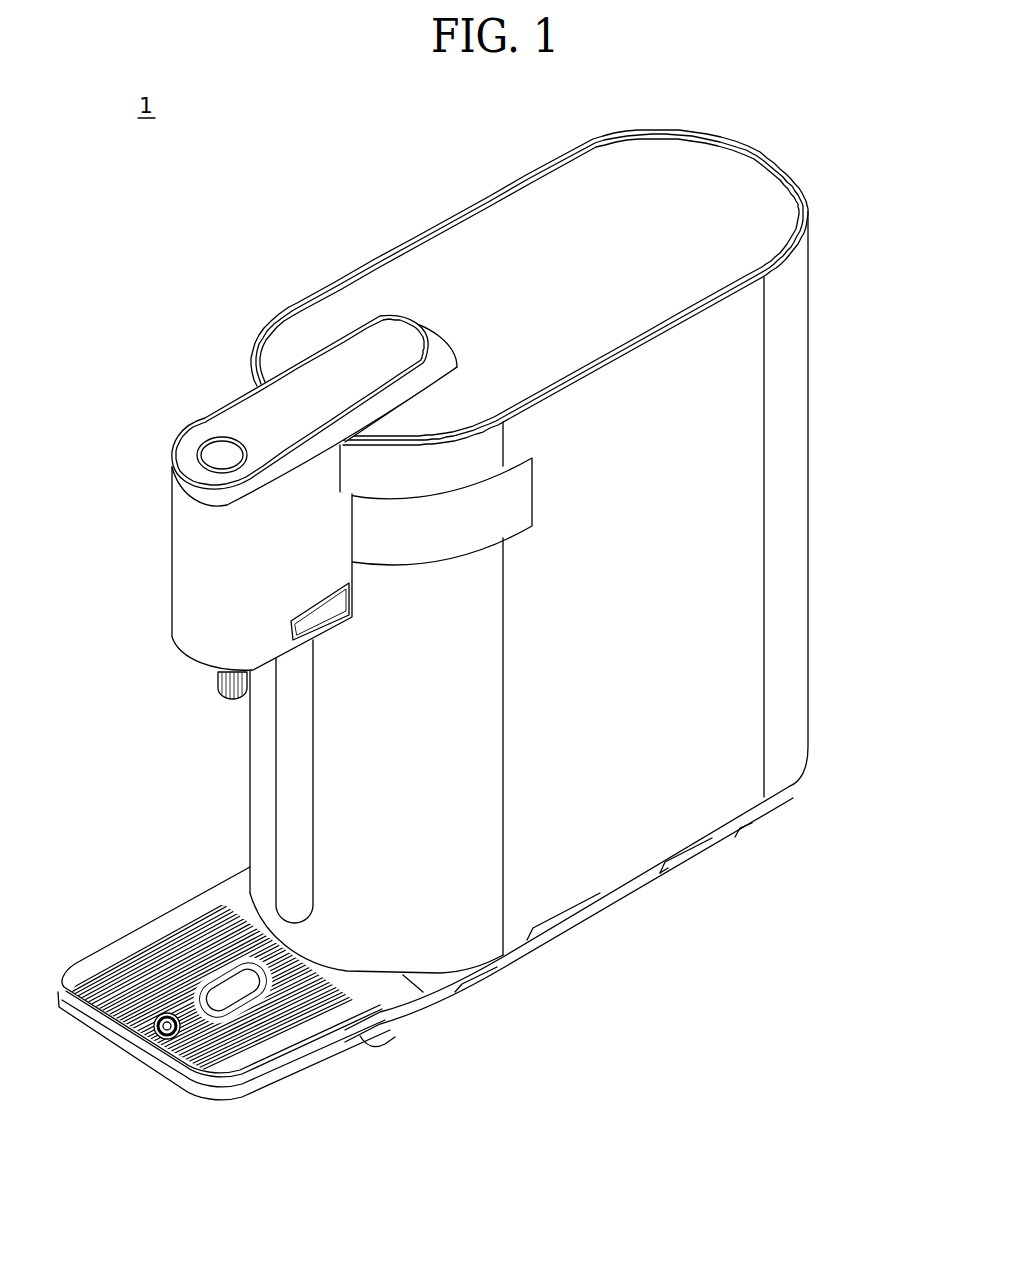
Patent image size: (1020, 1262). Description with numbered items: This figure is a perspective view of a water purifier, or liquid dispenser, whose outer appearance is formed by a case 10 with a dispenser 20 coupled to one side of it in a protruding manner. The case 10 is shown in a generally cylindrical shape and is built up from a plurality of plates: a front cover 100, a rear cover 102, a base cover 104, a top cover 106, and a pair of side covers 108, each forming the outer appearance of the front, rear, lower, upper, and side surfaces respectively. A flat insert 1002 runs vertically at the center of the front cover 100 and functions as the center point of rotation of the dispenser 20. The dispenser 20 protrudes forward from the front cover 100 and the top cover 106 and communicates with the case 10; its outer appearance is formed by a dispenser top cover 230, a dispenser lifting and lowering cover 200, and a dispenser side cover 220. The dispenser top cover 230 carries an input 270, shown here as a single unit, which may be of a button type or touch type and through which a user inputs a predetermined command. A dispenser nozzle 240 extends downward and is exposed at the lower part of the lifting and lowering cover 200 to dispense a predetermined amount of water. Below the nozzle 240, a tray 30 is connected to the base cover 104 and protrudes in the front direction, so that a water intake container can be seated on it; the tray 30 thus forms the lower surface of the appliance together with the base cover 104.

The case 10 is at (537, 595).
The dispenser 20 is at (353, 457).
The tray 30 is at (103, 958).
The front cover 100 is at (349, 766).
The rear cover 102 is at (795, 420).
The base cover 104 is at (620, 890).
The top cover 106 is at (532, 224).
The side cover 108 is at (637, 795).
The flat insert 1002 is at (287, 770).
The dispenser lifting and lowering cover 200 is at (371, 457).
The dispenser side cover 220 is at (548, 498).
The dispenser top cover 230 is at (330, 368).
The dispenser nozzle 240 is at (222, 684).
The input unit 270 is at (217, 455).